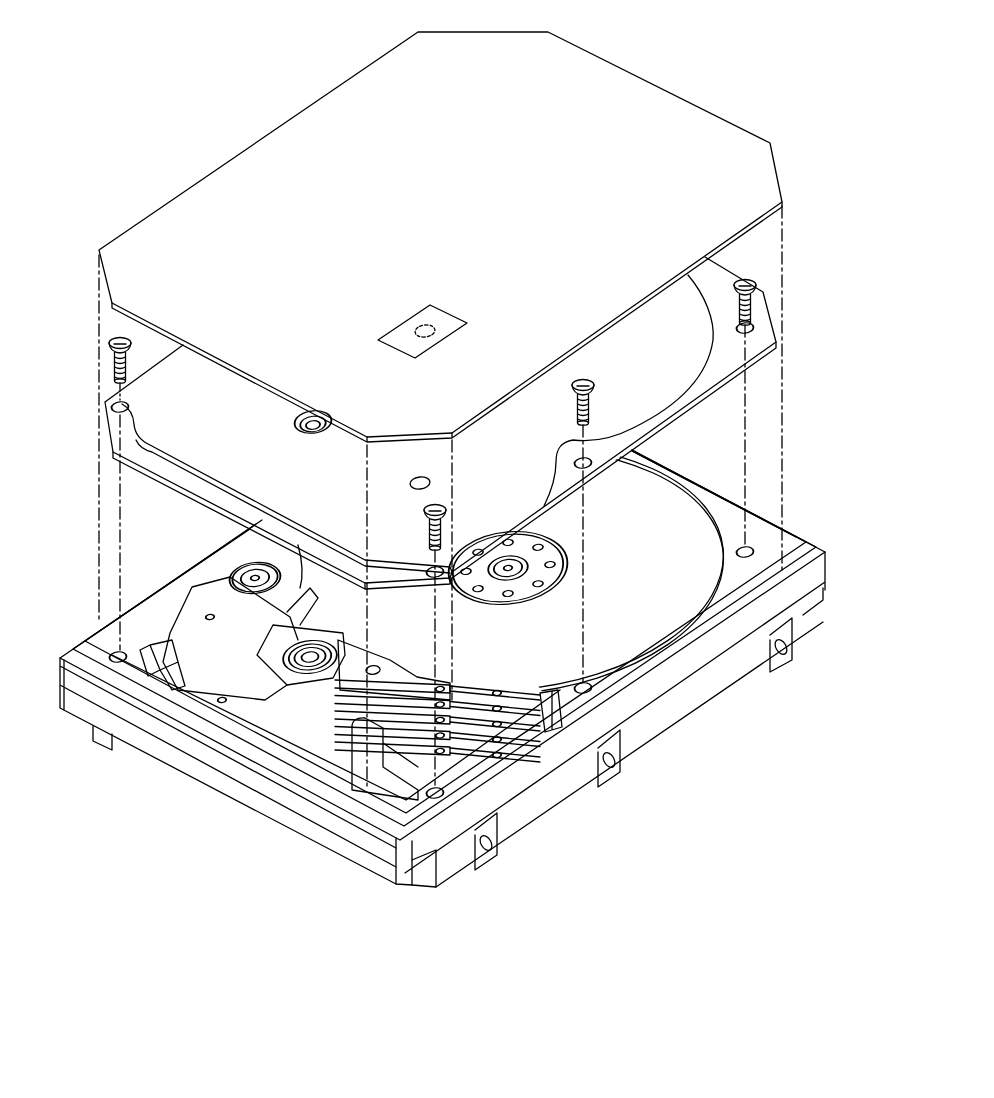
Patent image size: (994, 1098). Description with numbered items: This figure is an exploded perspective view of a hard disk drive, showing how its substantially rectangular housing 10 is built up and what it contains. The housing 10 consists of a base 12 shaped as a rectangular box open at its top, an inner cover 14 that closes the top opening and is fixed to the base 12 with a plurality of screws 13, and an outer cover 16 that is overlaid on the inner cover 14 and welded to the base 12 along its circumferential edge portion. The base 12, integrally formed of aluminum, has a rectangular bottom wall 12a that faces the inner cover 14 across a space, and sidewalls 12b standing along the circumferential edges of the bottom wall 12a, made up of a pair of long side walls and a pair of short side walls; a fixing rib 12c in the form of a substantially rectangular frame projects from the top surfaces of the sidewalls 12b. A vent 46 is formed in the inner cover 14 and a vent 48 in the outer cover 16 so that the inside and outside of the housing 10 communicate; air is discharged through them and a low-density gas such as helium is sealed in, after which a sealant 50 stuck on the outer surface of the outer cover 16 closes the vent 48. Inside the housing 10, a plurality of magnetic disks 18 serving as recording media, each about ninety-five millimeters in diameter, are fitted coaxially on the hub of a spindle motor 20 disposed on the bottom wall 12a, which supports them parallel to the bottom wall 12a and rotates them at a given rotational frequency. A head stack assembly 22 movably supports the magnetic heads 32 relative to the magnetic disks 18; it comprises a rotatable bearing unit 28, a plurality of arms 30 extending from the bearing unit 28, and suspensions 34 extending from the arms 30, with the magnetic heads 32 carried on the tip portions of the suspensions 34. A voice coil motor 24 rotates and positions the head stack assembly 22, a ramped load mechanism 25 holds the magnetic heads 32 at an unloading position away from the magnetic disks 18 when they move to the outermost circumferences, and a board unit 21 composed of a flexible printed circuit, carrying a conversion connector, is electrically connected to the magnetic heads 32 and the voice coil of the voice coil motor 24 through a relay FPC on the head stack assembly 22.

The housing 10 is at (143, 157).
The base 12 is at (654, 737).
The bottom wall 12a is at (460, 773).
The sidewalls 12b is at (577, 790).
The fixing rib 12c is at (165, 592).
The screws 13 is at (112, 337).
The inner cover 14 is at (670, 378).
The outer cover 16 is at (598, 76).
The magnetic disks 18 is at (657, 627).
The spindle motor 20 is at (556, 552).
The board unit 21 is at (398, 773).
The head stack assembly 22 is at (398, 658).
The voice coil motor 24 is at (212, 688).
The ramped load mechanism 25 is at (566, 669).
The bearing unit 28 is at (313, 640).
The arms 30 is at (432, 668).
The magnetic heads 32 is at (535, 696).
The suspensions 34 is at (506, 697).
The vent 46 is at (418, 488).
The vent 48 is at (425, 340).
The sealant 50 is at (445, 318).